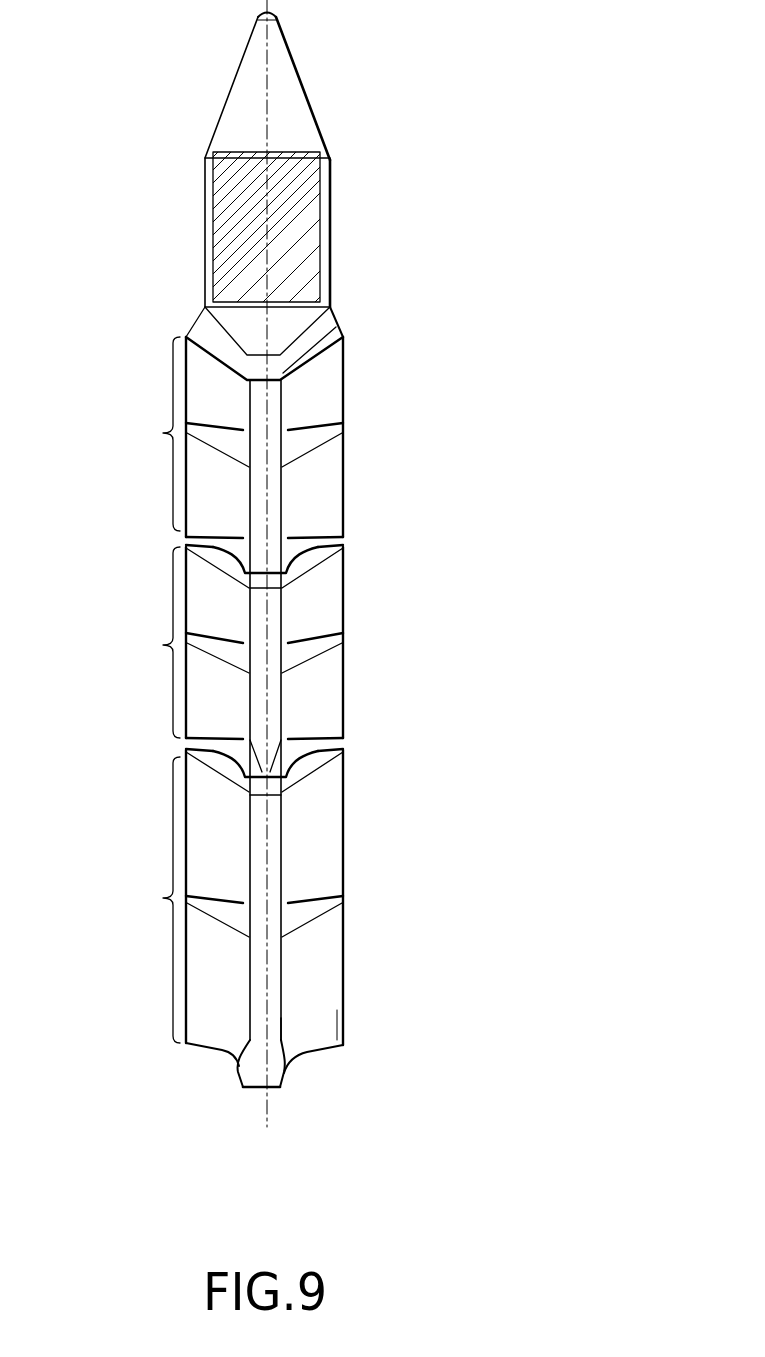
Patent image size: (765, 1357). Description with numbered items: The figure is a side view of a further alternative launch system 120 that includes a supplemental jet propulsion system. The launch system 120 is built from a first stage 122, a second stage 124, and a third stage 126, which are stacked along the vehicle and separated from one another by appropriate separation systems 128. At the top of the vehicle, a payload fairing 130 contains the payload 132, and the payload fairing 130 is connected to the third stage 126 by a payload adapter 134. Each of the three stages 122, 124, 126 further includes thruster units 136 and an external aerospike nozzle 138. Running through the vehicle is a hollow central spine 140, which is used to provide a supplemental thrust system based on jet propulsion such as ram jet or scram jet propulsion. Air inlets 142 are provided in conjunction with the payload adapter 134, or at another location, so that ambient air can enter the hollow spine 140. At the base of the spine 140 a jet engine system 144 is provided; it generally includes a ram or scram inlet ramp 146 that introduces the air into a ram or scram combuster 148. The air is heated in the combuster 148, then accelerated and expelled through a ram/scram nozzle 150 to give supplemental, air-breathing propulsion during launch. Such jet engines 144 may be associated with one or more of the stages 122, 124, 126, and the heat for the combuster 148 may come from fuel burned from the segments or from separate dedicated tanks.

The launch system 120 is at (447, 160).
The first stage 122 is at (226, 897).
The second stage 124 is at (224, 642).
The third stage 126 is at (224, 437).
The separation systems 128 is at (197, 540).
The payload fairing 130 is at (232, 80).
The payload 132 is at (233, 208).
The payload adapter 134 is at (187, 328).
The thruster units 136 is at (237, 1063).
The external aerospike nozzle 138 is at (233, 1082).
The central spine 140 is at (281, 823).
The air inlets 142 is at (330, 322).
The jet engine system 144 is at (306, 1003).
The ram or scram inlet ramp 146 is at (281, 1018).
The ram or scram combuster 148 is at (282, 1052).
The ram/scram nozzle 150 is at (272, 1087).